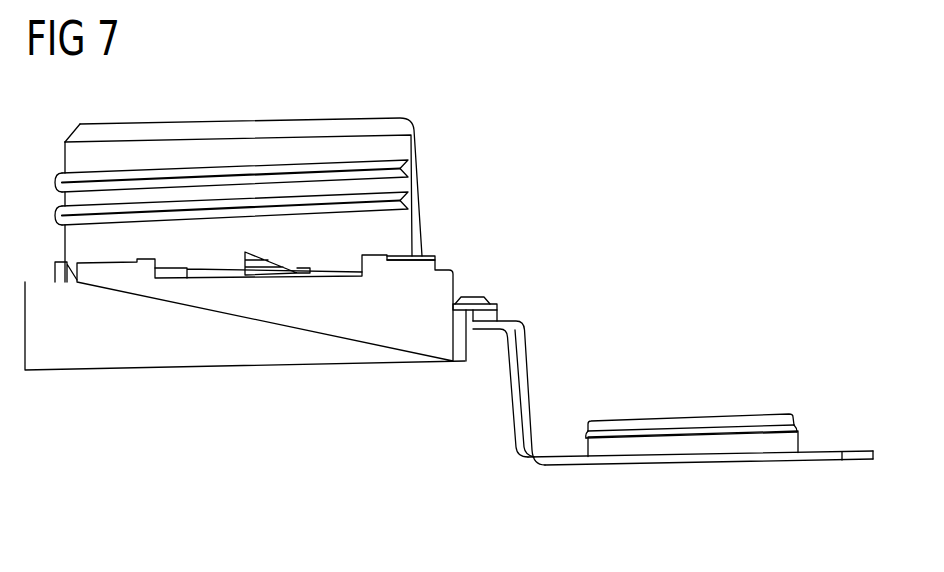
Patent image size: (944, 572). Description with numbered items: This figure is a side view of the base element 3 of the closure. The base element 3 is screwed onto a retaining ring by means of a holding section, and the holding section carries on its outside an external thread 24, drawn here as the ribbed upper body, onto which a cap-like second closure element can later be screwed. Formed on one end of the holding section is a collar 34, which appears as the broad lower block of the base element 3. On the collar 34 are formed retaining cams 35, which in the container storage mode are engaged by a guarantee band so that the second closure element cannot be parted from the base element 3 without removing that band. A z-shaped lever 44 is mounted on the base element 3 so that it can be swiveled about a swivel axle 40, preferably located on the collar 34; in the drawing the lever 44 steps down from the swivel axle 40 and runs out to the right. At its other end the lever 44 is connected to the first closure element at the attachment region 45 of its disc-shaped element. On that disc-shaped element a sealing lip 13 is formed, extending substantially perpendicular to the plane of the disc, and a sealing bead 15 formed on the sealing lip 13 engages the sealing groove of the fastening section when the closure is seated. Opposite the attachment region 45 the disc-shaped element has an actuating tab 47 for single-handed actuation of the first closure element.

The base element 3 is at (150, 407).
The sealing lip 13 is at (770, 418).
The sealing bead 15 is at (665, 438).
The external thread 24 is at (385, 158).
The collar 34 is at (335, 342).
The retaining cams 35 is at (433, 254).
The swivel axle 40 is at (472, 297).
The z-shaped lever 44 is at (525, 352).
The attachment region 45 is at (557, 462).
The actuating tab 47 is at (862, 451).